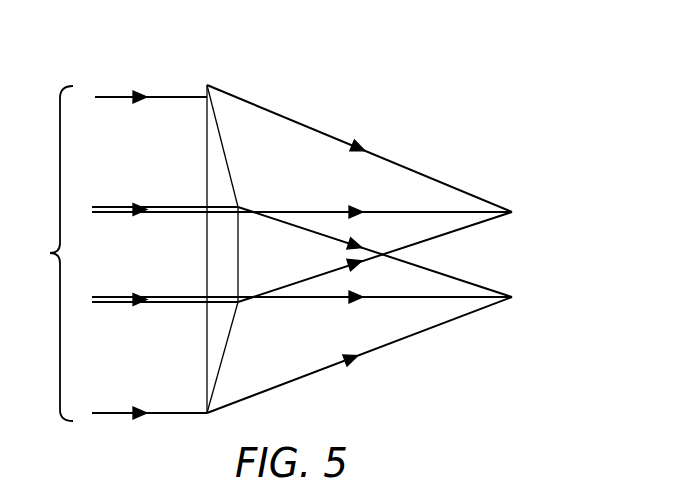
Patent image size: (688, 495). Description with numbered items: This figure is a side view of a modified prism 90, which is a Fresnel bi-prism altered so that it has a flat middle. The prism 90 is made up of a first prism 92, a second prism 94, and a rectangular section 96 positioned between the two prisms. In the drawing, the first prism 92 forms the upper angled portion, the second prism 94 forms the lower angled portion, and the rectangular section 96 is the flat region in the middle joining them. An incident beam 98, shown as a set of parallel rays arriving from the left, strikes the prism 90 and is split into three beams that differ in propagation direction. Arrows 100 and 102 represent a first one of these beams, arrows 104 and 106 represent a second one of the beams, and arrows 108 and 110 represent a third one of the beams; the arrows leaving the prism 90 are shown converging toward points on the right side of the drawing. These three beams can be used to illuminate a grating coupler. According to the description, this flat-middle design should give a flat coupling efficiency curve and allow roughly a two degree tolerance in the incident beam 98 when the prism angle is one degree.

The prism 90 is at (302, 102).
The first prism 92 is at (226, 157).
The second prism 94 is at (223, 362).
The rectangular section 96 is at (240, 262).
The incident beam 98 is at (126, 253).
The arrow representing first beam 100 is at (418, 172).
The arrow representing first beam 102 is at (437, 272).
The arrow representing second beam 104 is at (415, 335).
The arrow representing second beam 106 is at (473, 226).
The arrow representing third beam 108 is at (408, 300).
The arrow representing third beam 110 is at (392, 208).